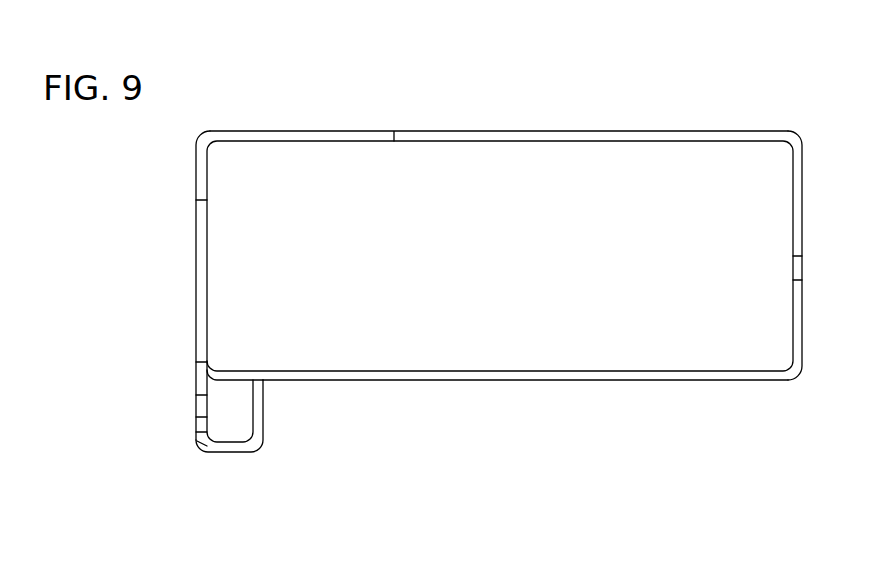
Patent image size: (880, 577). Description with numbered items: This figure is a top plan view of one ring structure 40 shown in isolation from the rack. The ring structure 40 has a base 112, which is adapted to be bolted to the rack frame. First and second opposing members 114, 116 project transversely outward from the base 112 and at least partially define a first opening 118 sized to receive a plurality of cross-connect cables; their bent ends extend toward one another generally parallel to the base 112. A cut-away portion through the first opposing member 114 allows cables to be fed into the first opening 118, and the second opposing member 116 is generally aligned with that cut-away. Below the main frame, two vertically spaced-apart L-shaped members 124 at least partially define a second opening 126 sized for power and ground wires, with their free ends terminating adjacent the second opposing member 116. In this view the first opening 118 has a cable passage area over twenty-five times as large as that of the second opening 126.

The ring structure 40 is at (550, 88).
The base 112 is at (196, 280).
The first opposing member 114 is at (607, 131).
The second opposing member 116 is at (563, 380).
The first opening 118 is at (373, 217).
The L-shaped member 124 is at (223, 452).
The second opening 126 is at (233, 412).